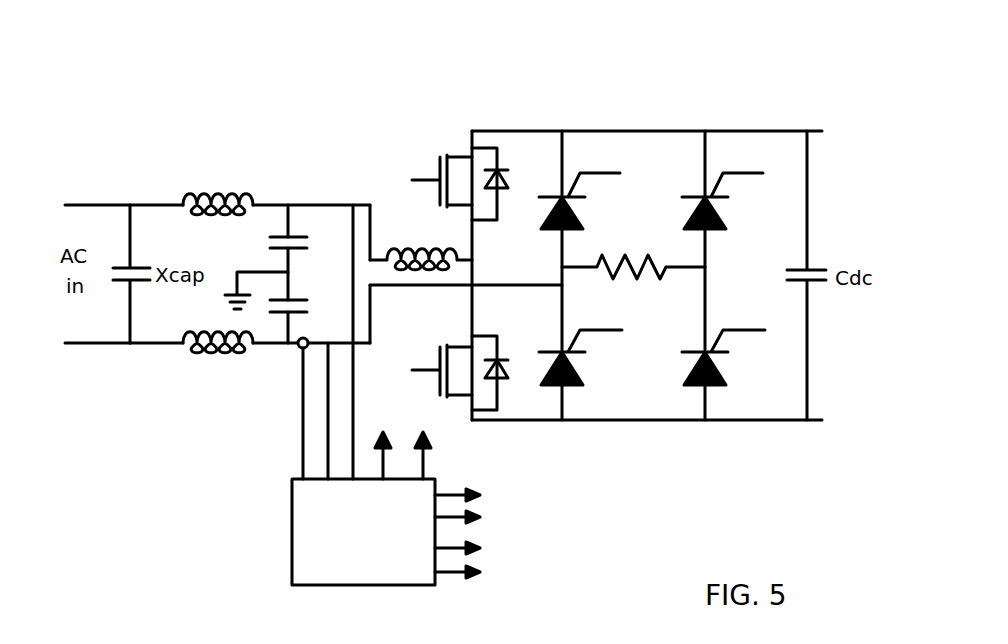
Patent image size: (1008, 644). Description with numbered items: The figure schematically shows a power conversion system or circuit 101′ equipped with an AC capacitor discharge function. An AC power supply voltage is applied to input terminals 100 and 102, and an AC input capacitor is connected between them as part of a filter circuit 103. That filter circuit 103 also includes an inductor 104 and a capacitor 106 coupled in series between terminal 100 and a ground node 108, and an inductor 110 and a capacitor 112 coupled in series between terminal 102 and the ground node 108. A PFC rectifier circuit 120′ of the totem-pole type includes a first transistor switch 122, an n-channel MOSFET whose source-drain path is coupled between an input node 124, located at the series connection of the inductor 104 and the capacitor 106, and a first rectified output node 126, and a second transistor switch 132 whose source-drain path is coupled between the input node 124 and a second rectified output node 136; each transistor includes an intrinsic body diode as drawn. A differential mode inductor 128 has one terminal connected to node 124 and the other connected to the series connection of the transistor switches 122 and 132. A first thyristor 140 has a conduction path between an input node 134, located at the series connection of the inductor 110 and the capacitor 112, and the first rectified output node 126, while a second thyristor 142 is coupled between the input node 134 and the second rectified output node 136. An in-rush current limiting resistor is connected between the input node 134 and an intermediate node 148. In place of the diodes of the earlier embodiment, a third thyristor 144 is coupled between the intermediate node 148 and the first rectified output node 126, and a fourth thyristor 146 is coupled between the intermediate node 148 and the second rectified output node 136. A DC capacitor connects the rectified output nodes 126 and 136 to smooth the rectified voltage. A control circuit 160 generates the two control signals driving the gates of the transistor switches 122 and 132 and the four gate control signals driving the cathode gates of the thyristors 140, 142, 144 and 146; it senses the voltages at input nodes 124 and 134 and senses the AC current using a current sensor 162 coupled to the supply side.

The input terminal 100 is at (80, 203).
The input terminal 102 is at (90, 345).
The filter circuit 103 is at (282, 190).
The inductor 104 is at (203, 192).
The capacitor 106 is at (268, 242).
The ground node 108 is at (230, 297).
The inductor 110 is at (197, 355).
The capacitor 112 is at (310, 308).
The input node 124 is at (318, 205).
The current sensor 162 is at (297, 350).
The power conversion system or circuit 101′ is at (378, 111).
The first transistor switch 122 is at (447, 155).
The differential mode inductor 128 is at (408, 250).
The input node 134 is at (374, 327).
The second transistor switch 132 is at (445, 397).
The PFC rectifier circuit 120′ is at (618, 111).
The first rectified output node 126 is at (737, 128).
The second rectified output node 136 is at (582, 423).
The first thyristor 140 is at (577, 220).
The second thyristor 142 is at (578, 378).
The third thyristor 144 is at (720, 220).
The fourth thyristor 146 is at (721, 378).
The intermediate node 148 is at (707, 265).
The control circuit 160 is at (292, 525).